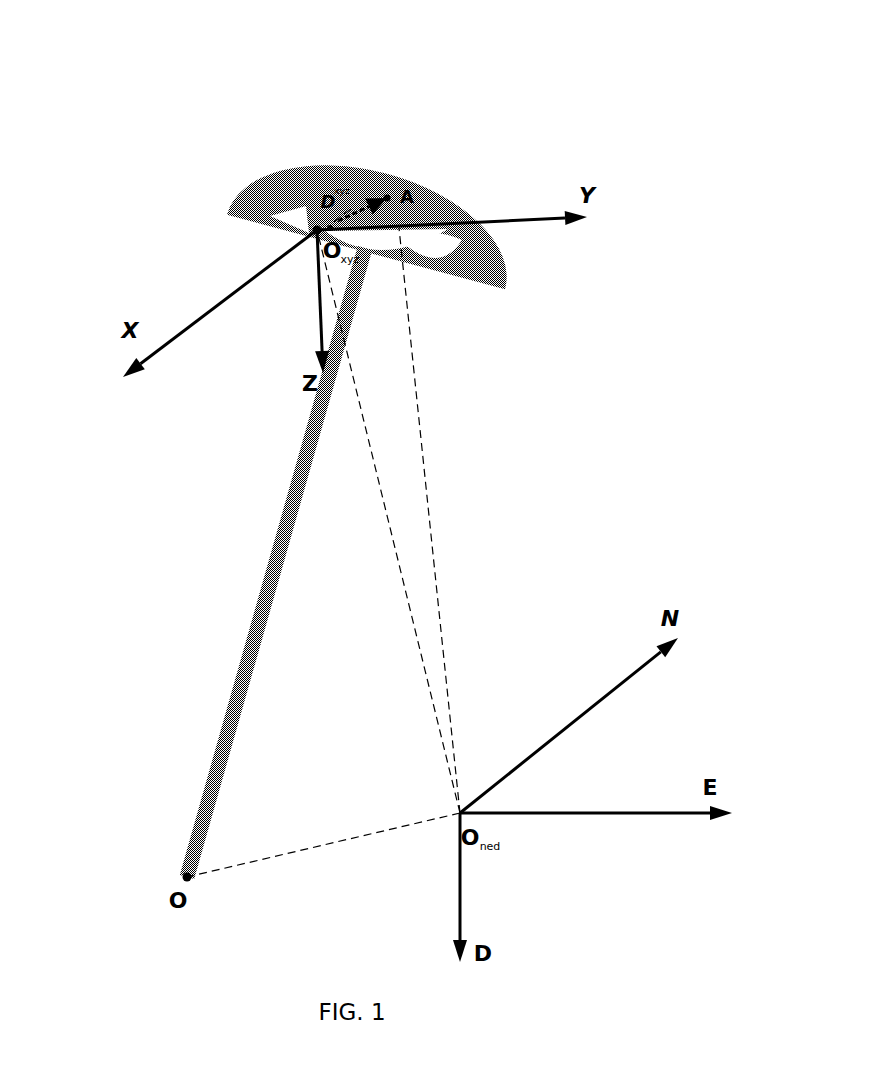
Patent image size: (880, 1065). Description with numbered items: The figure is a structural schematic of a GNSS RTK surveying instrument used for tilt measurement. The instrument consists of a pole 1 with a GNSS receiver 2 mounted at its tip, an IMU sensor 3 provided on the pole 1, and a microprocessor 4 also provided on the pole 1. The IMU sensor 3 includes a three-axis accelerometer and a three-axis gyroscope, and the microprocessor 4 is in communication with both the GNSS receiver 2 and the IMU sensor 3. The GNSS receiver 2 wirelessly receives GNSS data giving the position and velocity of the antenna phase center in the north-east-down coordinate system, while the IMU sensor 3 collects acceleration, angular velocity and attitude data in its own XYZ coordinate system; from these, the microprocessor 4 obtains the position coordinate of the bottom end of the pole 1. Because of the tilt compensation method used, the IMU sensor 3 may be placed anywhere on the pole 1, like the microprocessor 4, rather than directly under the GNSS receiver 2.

The pole 1 is at (205, 562).
The GNSS receiver 2 is at (398, 150).
The IMU sensor 3 is at (201, 116).
The microprocessor 4 is at (522, 358).